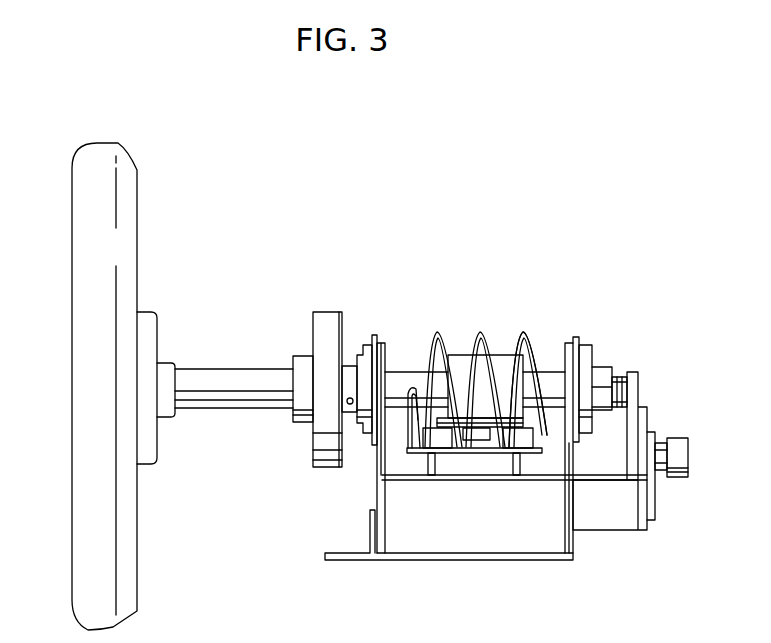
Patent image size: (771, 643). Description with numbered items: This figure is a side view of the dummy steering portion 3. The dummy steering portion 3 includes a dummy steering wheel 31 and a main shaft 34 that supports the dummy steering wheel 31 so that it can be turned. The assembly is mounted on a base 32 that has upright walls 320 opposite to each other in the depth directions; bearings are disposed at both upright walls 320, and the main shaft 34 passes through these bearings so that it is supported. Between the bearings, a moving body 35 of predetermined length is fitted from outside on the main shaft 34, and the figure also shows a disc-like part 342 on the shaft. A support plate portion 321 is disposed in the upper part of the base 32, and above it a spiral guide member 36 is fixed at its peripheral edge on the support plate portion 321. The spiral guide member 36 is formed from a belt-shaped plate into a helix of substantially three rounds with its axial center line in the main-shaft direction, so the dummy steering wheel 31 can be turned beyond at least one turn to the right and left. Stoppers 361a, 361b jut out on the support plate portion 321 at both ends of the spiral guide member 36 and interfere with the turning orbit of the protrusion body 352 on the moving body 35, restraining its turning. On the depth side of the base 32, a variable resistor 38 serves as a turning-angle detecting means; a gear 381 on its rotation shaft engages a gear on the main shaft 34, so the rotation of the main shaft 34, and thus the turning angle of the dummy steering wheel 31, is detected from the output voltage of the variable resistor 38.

The dummy steering portion 3 is at (650, 377).
The dummy steering wheel 31 is at (80, 181).
The base 32 is at (513, 562).
The main shaft 34 is at (231, 380).
The moving body 35 is at (452, 345).
The spiral guide member 36 is at (507, 350).
The variable resistor 38 is at (677, 478).
The upright wall 320 is at (575, 534).
The support plate portion 321 is at (419, 458).
The disc 342 is at (325, 320).
The protrusion body 352 is at (478, 431).
The stopper 361a is at (440, 440).
The stopper 361b is at (513, 440).
The gear 381 is at (636, 423).